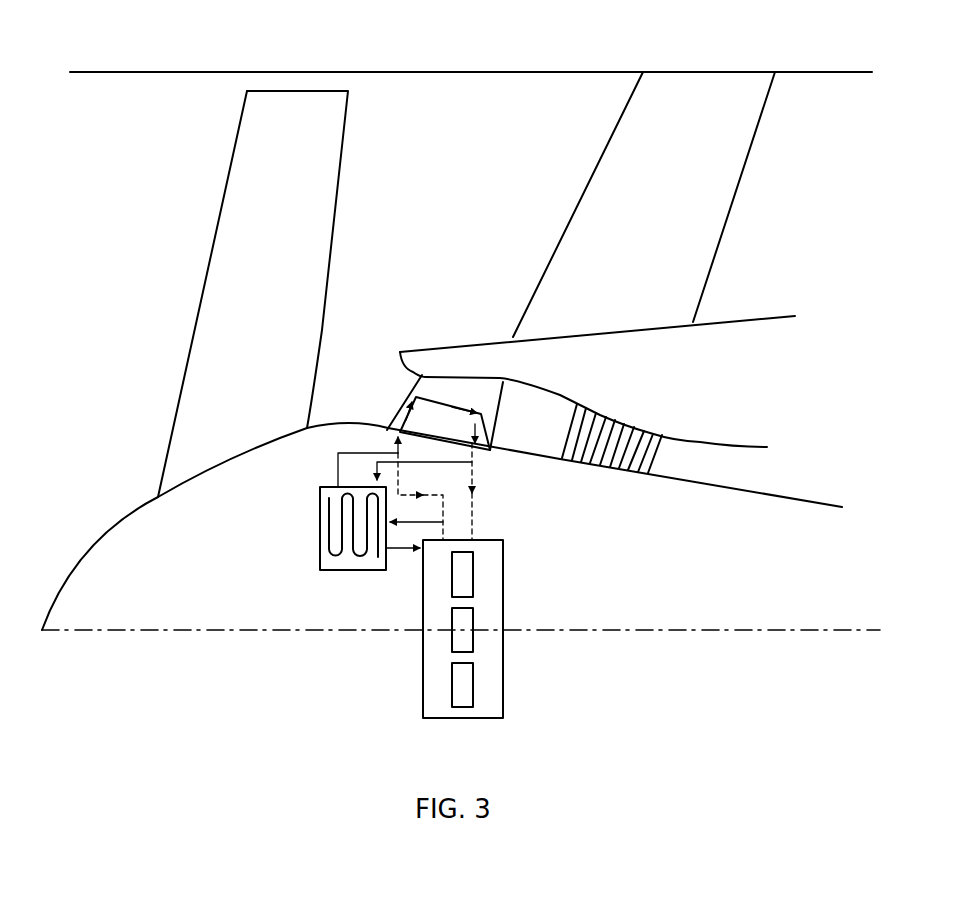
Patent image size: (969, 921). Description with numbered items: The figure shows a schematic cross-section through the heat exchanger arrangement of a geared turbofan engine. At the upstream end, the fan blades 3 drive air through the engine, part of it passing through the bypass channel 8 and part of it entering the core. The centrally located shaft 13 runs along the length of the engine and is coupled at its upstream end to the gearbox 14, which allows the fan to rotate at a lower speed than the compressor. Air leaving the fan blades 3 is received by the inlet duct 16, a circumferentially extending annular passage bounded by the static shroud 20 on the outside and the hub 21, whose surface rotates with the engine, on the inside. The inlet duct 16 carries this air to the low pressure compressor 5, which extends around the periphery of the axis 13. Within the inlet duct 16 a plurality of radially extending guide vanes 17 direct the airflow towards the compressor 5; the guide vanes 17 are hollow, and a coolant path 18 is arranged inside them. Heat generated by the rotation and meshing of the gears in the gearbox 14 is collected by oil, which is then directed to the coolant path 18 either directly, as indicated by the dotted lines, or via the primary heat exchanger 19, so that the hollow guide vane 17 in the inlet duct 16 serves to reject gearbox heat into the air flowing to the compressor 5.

The fan blades 3 is at (222, 362).
The low pressure compressor 5 is at (618, 460).
The bypass channel 8 is at (575, 110).
The shaft 13 is at (827, 630).
The gearbox 14 is at (432, 682).
The inlet duct 16 is at (378, 390).
The guide vane 17 is at (445, 417).
The coolant path 18 is at (452, 402).
The primary heat exchanger 19 is at (325, 533).
The shroud 20 is at (493, 377).
The hub 21 is at (513, 452).